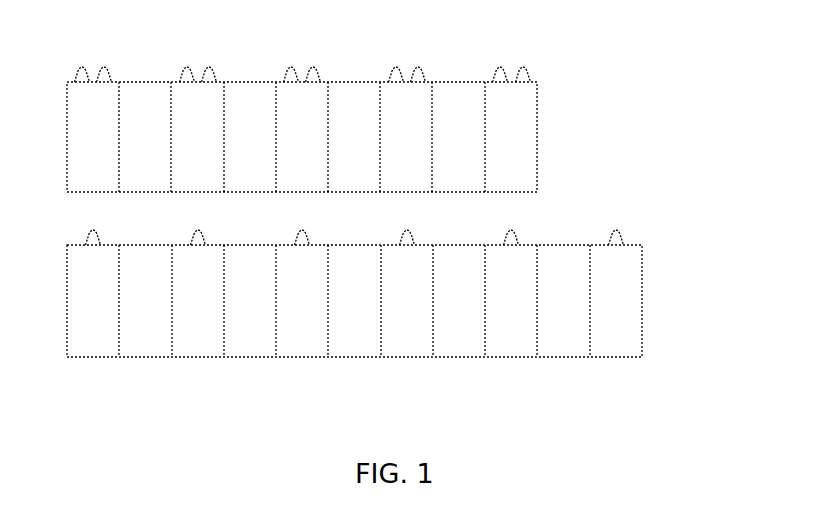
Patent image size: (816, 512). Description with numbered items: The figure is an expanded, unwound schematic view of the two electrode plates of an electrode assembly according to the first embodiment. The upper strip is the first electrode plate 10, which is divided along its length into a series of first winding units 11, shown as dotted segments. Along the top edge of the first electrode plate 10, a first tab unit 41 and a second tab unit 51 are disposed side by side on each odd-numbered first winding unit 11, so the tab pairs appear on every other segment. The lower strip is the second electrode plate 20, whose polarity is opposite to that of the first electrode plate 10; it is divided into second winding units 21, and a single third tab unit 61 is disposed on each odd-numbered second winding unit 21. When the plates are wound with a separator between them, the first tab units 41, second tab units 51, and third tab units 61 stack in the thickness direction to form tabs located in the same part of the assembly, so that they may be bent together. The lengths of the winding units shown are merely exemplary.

The first electrode plate 10 is at (340, 114).
The first winding unit 11 is at (532, 97).
The first tab unit 41 is at (500, 72).
The second tab unit 51 is at (524, 66).
The second electrode plate 20 is at (396, 285).
The second winding unit 21 is at (632, 263).
The third tab unit 61 is at (619, 235).